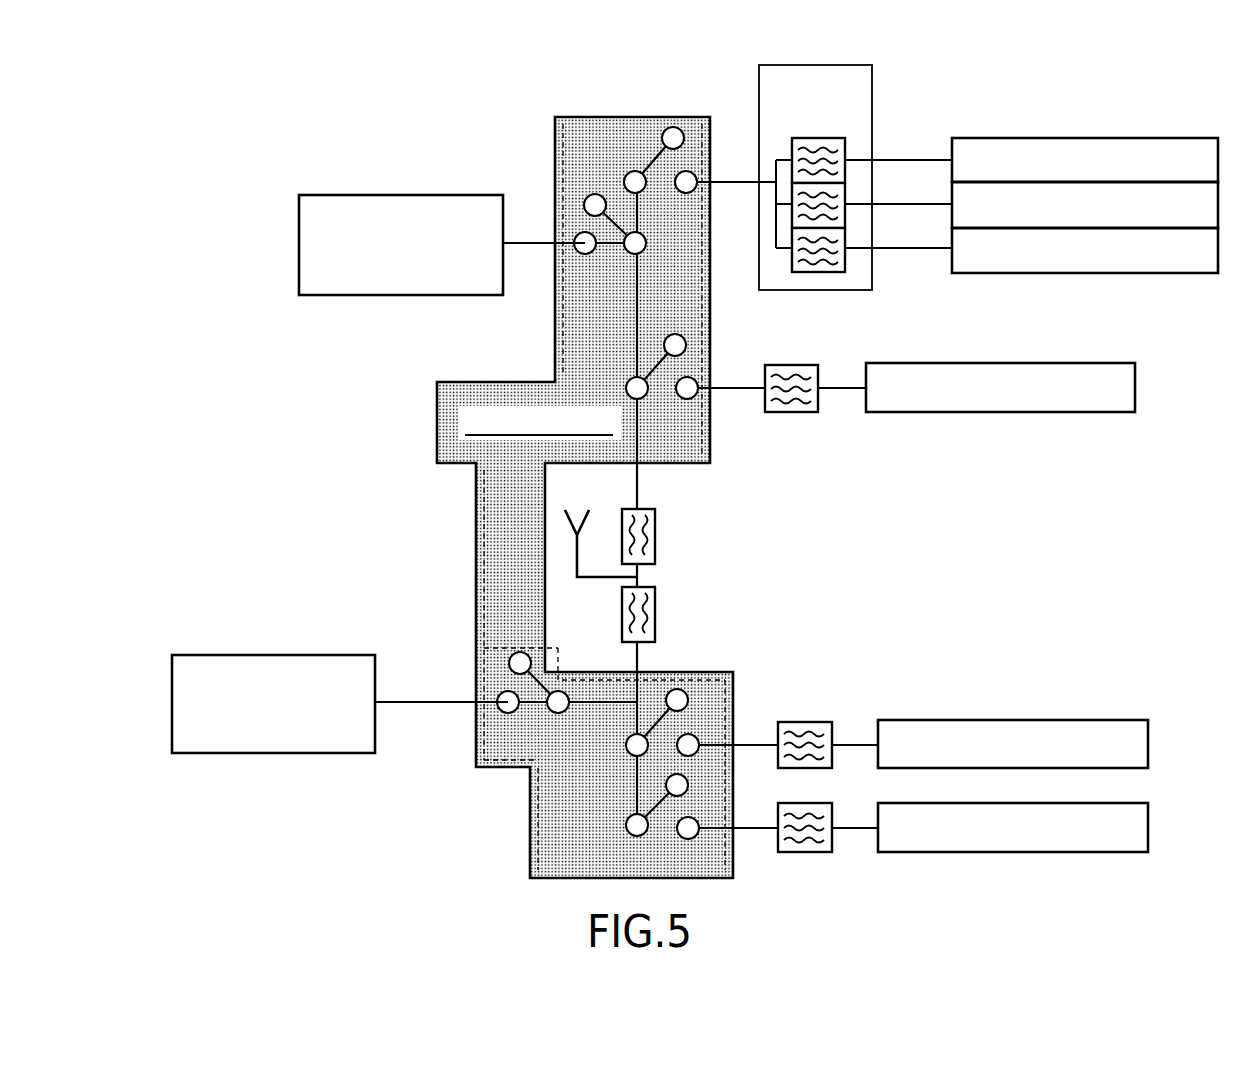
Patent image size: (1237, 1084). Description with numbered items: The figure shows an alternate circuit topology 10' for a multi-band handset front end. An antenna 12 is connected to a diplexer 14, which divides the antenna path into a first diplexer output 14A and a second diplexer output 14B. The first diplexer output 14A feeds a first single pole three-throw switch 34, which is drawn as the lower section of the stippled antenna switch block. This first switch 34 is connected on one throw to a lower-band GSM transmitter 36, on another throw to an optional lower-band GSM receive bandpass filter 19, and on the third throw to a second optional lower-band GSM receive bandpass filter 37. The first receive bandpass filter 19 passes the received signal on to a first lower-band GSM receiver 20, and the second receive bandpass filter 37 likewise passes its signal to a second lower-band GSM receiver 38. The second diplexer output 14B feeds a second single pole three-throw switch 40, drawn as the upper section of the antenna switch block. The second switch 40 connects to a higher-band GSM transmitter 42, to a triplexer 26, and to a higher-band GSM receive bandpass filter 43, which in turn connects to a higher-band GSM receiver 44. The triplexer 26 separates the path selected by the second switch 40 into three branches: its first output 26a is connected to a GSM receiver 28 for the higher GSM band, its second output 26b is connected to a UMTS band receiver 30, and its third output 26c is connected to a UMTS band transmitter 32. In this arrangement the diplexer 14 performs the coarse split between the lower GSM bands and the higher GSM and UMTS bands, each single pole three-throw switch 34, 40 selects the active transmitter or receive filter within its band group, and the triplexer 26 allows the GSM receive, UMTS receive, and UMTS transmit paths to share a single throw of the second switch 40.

The alternate circuit topology embodiment 10' is at (238, 137).
The second single pole three-throw switch 40 is at (612, 145).
The first single pole three-throw switch 34 is at (735, 692).
The GSM 1800/1900 transmitter 42 is at (350, 236).
The GSM 850/900 transmitter 36 is at (222, 693).
The triplexer 26 is at (834, 131).
The first triplexer output 26a is at (845, 240).
The second triplexer output 26b is at (845, 196).
The third triplexer output 26c is at (845, 150).
The UMTS band transmitter 32 is at (1214, 166).
The UMTS band receiver 30 is at (1214, 211).
The GSM 1800 receiver 28 is at (1214, 256).
The bandpass filter for GSM 1900 receive 43 is at (792, 412).
The GSM 1900 receiver 44 is at (1131, 398).
The antenna 12 is at (594, 501).
The diplexer 14 is at (709, 564).
The first diplexer output 14A is at (638, 655).
The second diplexer output 14B is at (638, 485).
The bandpass filter for GSM 900 receive 19 is at (808, 722).
The GSM 900 receiver 20 is at (1143, 756).
The bandpass filter for GSM 850 receive 37 is at (805, 852).
The GSM 850 receiver 38 is at (1143, 839).